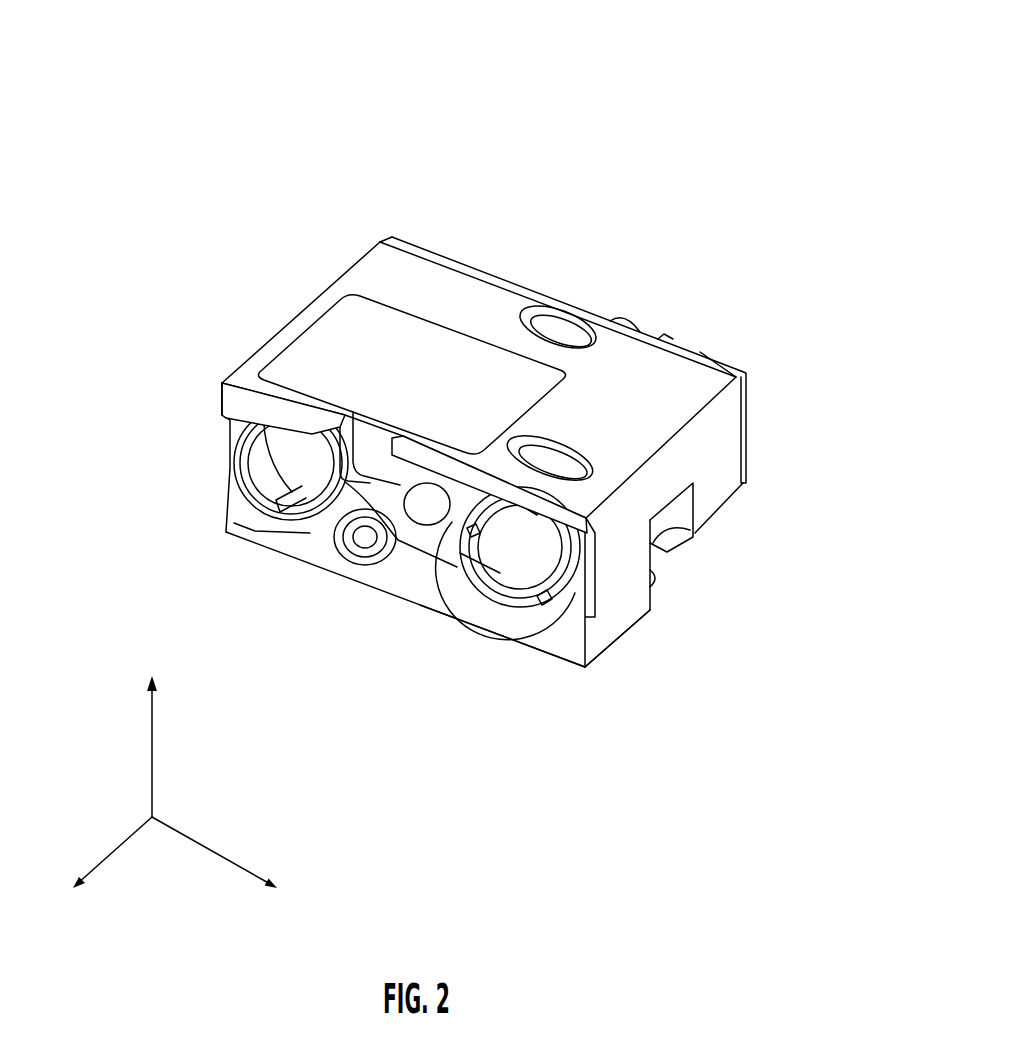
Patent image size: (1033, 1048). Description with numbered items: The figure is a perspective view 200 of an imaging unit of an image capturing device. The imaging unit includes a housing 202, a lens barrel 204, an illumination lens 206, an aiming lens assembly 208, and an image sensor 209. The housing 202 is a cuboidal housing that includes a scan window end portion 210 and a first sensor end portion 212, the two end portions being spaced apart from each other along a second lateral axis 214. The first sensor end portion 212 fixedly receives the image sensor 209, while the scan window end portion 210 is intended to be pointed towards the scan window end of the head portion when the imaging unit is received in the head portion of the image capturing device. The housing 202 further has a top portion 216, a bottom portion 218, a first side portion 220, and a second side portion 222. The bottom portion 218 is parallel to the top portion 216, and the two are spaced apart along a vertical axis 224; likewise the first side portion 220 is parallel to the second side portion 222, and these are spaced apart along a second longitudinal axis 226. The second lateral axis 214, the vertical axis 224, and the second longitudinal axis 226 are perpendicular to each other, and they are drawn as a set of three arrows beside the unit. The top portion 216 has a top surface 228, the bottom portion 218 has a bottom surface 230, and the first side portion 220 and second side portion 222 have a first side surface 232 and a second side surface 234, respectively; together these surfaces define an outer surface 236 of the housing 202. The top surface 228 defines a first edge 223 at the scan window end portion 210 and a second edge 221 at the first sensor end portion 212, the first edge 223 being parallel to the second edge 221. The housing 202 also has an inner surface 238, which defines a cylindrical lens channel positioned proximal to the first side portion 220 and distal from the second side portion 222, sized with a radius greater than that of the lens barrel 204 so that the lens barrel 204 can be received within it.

The perspective view 200 is at (322, 86).
The housing 202 is at (278, 341).
The lens barrel 204 is at (544, 600).
The illumination lens 206 is at (310, 437).
The aiming lens assembly 208 is at (381, 472).
The image sensor 209 is at (700, 352).
The scan window end portion 210 is at (559, 660).
The first sensor end portion 212 is at (490, 272).
The second lateral axis 214 is at (128, 840).
The top portion 216 is at (344, 300).
The bottom portion 218 is at (630, 630).
The first side portion 220 is at (704, 430).
The second edge 221 is at (606, 318).
The second side portion 222 is at (240, 373).
The first edge 223 is at (230, 410).
The vertical axis 224 is at (153, 748).
The second longitudinal axis 226 is at (228, 860).
The top surface 228 is at (424, 275).
The bottom surface 230 is at (708, 535).
The first side surface 232 is at (708, 486).
The second side surface 234 is at (346, 268).
The outer surface 236 is at (373, 260).
The inner surface 238 is at (487, 600).